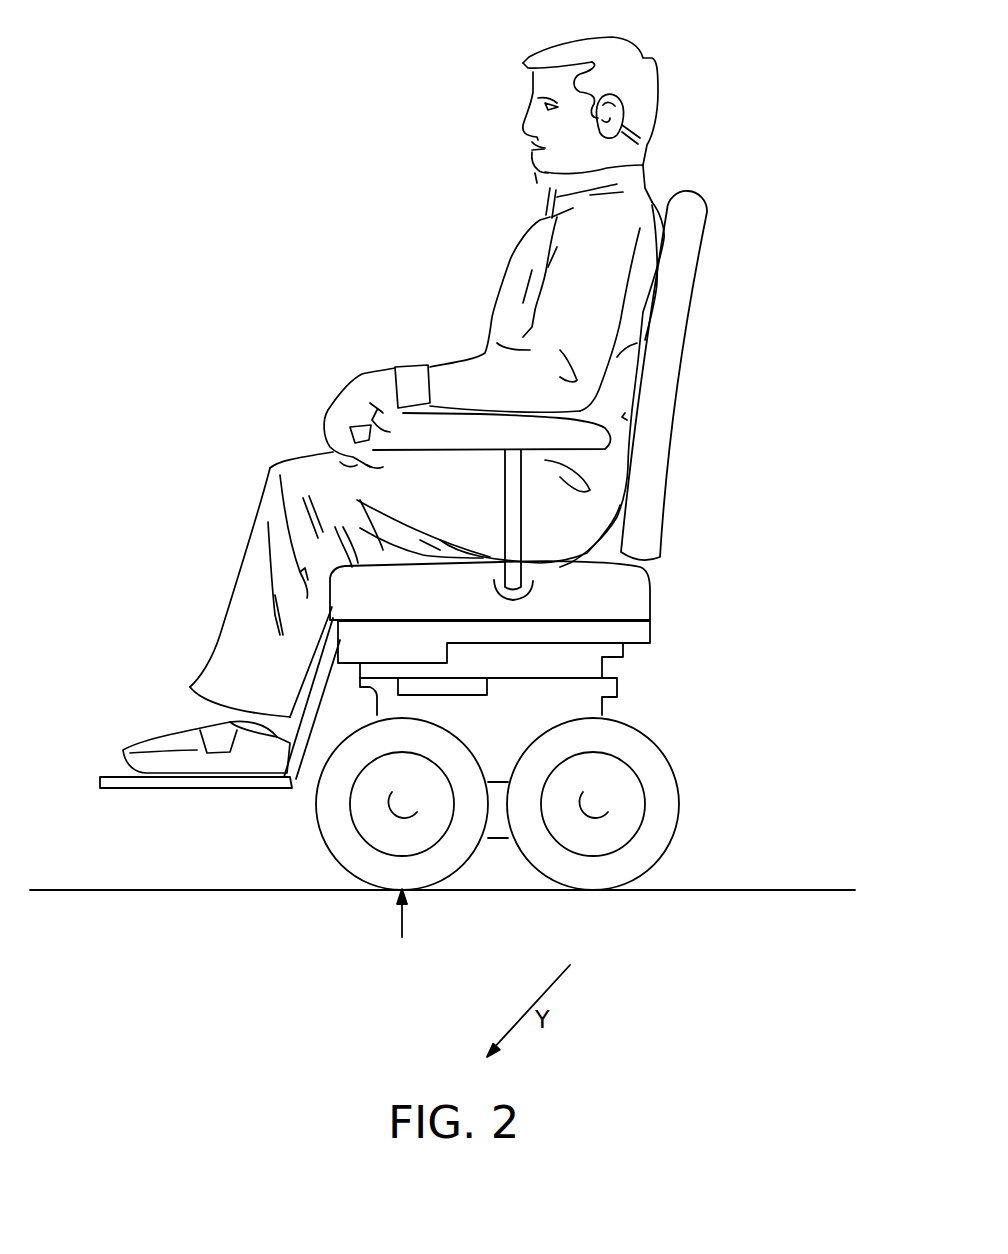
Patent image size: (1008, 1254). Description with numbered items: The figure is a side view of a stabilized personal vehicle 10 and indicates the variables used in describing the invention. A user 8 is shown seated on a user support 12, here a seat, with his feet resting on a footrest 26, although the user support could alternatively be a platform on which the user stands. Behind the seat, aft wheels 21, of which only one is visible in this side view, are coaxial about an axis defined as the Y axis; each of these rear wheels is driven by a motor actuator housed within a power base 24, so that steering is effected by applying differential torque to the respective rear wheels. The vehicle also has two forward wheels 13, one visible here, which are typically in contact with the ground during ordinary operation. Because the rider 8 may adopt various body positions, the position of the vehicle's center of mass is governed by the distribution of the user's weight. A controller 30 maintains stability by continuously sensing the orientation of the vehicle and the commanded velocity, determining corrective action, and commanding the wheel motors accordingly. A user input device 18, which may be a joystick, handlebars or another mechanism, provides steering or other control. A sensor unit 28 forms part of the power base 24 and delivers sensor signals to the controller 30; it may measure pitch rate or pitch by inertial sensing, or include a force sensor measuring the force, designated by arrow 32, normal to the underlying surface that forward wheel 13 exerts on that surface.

The user 8 is at (700, 190).
The vehicle 10 is at (822, 233).
The user support 12 is at (651, 596).
The forward wheel 13 is at (320, 832).
The user input device 18 is at (403, 437).
The aft wheel 21 is at (680, 803).
The power base 24 is at (570, 700).
The footrest 26 is at (98, 782).
The sensor unit 28 is at (475, 695).
The controller 30 is at (552, 648).
The force arrow 32 is at (398, 918).